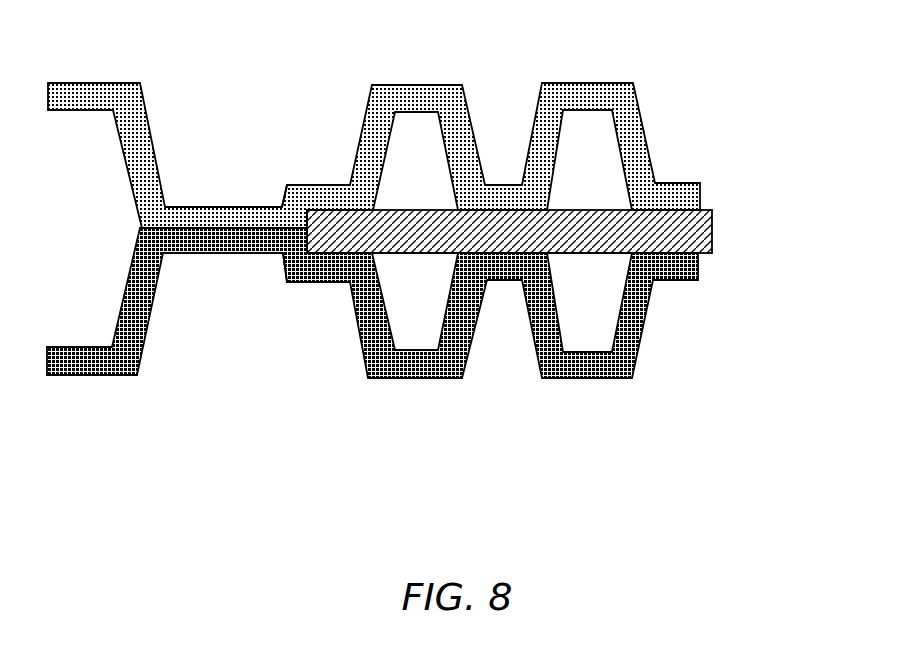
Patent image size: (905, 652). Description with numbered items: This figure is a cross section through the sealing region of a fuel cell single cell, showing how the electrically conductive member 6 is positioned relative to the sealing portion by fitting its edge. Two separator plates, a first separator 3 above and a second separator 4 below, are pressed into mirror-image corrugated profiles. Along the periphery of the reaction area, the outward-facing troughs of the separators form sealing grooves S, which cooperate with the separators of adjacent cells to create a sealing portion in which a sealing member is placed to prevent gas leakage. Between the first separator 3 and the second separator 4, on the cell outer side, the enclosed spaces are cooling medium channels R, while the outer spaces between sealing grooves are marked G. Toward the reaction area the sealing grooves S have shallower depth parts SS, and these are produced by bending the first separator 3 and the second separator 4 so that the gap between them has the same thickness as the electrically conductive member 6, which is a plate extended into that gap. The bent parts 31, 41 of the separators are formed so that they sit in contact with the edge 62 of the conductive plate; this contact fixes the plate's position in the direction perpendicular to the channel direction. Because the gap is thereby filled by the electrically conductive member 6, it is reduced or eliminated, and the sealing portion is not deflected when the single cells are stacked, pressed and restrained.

The first separator 3 is at (700, 193).
The second separator 4 is at (698, 275).
The electrically conductive member 6 is at (712, 225).
The bent part of first separator 31 is at (303, 270).
The bent part of second separator 41 is at (303, 270).
The edge of electrically conductive plate 62 is at (307, 237).
The sealing groove S is at (368, 72).
The shallower depth part SS is at (323, 187).
The cooling medium channel R is at (414, 235).
The gap G is at (498, 243).